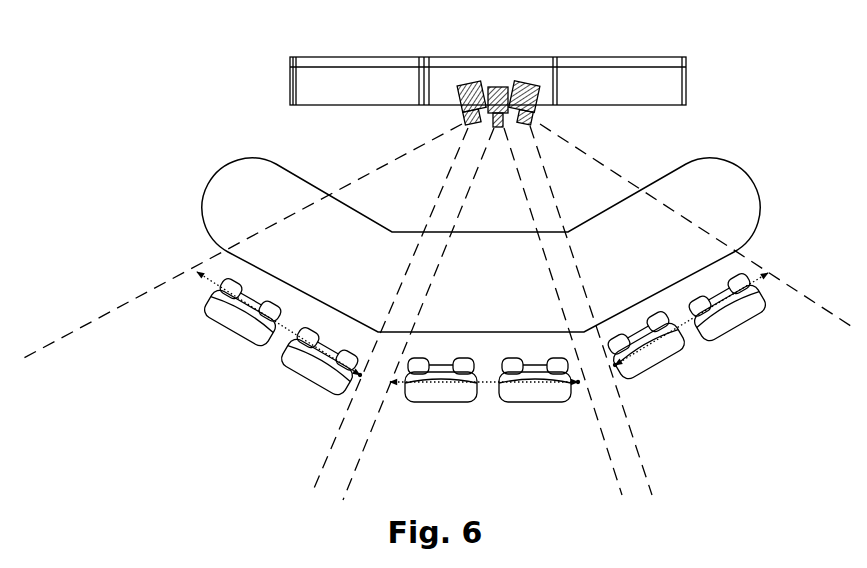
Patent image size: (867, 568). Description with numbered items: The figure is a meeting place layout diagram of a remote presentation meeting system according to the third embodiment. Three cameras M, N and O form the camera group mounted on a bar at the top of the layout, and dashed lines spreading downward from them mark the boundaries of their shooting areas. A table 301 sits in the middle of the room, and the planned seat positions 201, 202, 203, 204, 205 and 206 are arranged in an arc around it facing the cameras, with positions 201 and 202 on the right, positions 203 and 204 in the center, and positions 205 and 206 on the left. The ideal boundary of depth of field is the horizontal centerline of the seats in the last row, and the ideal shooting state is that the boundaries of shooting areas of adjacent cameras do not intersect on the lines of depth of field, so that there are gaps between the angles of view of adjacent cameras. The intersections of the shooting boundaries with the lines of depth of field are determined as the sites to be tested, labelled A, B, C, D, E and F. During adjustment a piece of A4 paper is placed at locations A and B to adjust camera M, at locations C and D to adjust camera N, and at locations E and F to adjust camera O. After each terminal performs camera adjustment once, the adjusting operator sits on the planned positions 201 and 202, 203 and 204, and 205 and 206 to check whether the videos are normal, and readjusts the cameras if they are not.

The planned position 201 is at (726, 307).
The planned position 202 is at (645, 345).
The planned position 203 is at (535, 380).
The planned position 204 is at (441, 380).
The planned position 205 is at (320, 361).
The planned position 206 is at (243, 312).
The conference table 301 is at (481, 245).
The site to be tested A is at (768, 273).
The site to be tested B is at (593, 307).
The site to be tested C is at (578, 382).
The site to be tested D is at (390, 382).
The site to be tested E is at (360, 375).
The site to be tested F is at (197, 272).
The camera M is at (528, 82).
The camera N is at (498, 88).
The camera O is at (470, 83).